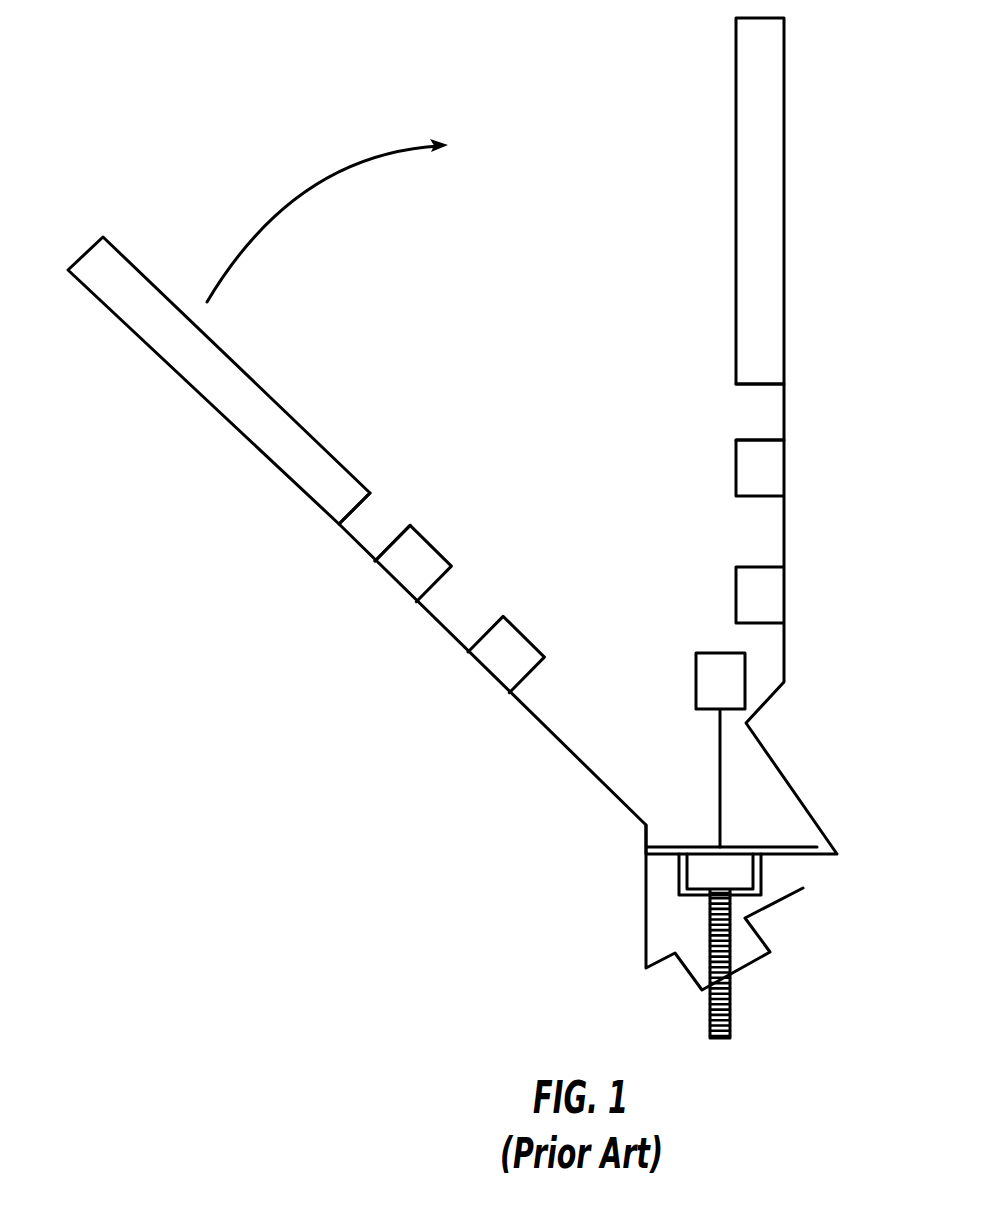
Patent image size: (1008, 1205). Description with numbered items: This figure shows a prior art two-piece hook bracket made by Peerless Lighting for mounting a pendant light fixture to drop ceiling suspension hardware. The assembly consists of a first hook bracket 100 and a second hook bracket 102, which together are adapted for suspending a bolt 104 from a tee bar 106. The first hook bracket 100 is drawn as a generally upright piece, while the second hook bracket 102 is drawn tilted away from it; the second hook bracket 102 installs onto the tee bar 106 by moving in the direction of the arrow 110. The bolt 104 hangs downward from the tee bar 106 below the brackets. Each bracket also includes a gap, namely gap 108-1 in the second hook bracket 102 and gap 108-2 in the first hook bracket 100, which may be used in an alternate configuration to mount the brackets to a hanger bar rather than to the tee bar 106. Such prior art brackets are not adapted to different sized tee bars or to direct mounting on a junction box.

The first hook bracket 100 is at (798, 410).
The second hook bracket 102 is at (202, 398).
The bolt 104 is at (733, 1007).
The tee bar 106 is at (718, 730).
The gap 108-1 is at (377, 533).
The gap 108-2 is at (753, 402).
The arrow 110 is at (347, 162).